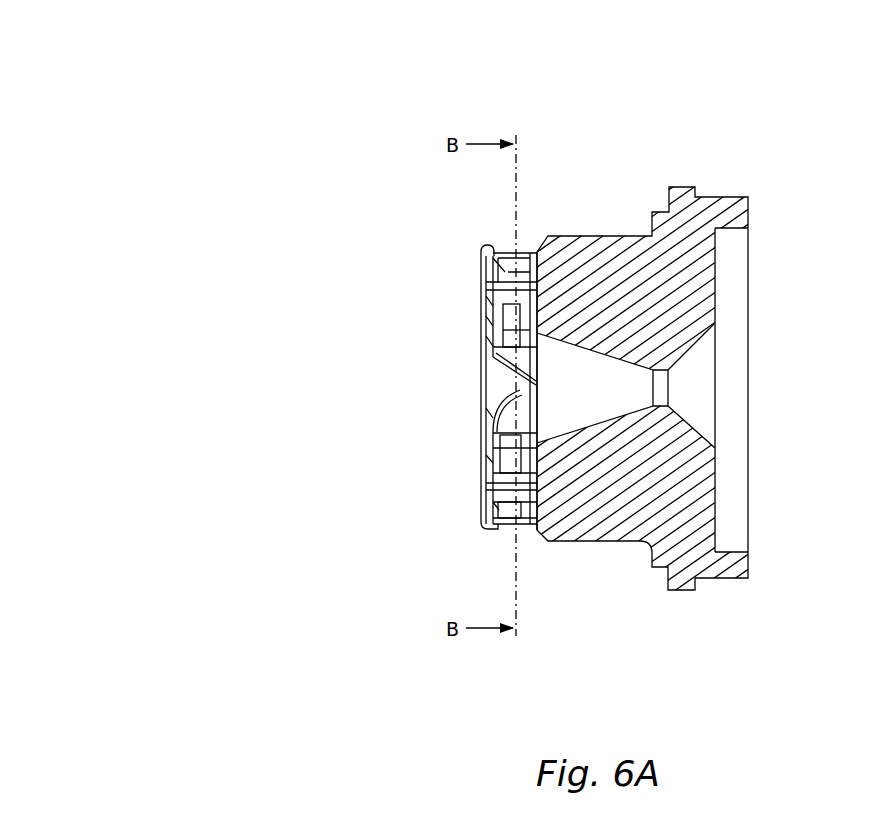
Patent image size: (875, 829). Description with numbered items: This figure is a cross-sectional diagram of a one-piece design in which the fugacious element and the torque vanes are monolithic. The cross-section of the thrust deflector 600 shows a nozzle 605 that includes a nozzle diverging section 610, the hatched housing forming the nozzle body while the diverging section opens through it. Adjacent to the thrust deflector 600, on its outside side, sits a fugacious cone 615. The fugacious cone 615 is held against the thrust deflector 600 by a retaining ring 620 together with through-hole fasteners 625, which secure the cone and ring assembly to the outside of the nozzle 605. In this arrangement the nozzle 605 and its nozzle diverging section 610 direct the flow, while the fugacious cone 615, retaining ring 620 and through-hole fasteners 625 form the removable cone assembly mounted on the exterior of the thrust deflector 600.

The thrust deflector 600 is at (202, 121).
The nozzle 605 is at (756, 195).
The nozzle diverging section 610 is at (592, 342).
The fugacious cone 615 is at (494, 375).
The retaining ring 620 is at (477, 527).
The through-hole fasteners 625 is at (479, 282).